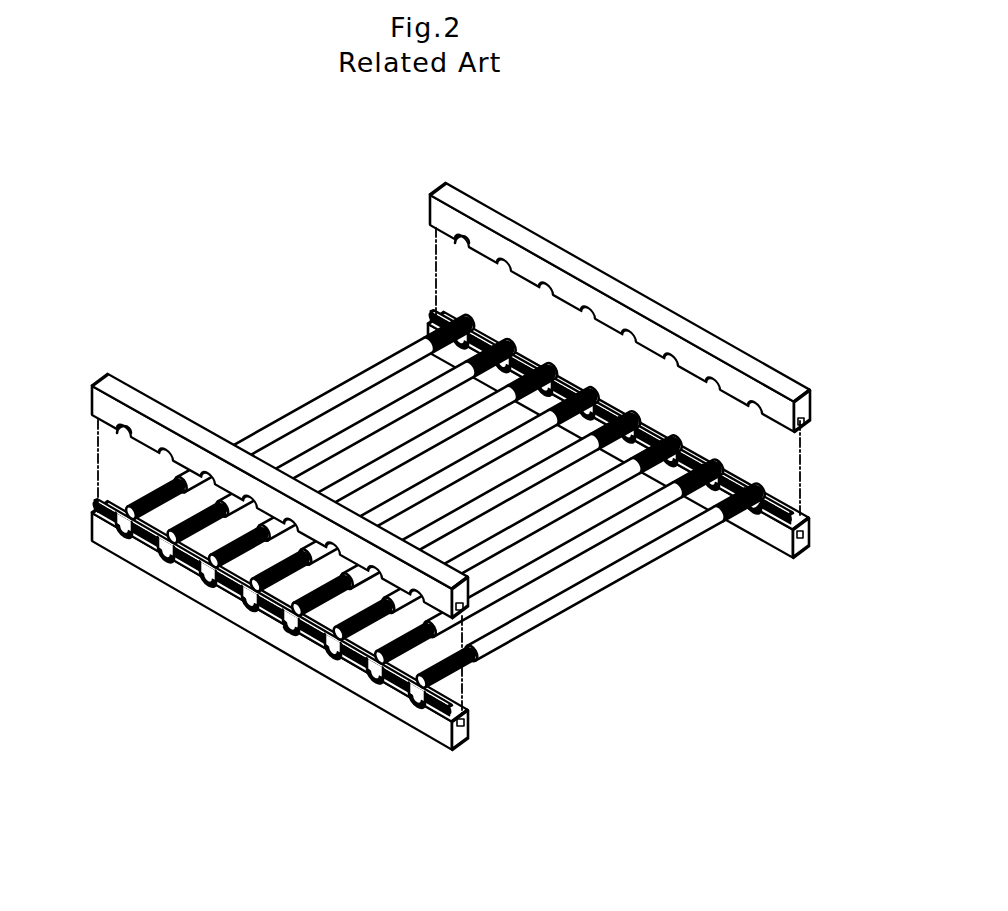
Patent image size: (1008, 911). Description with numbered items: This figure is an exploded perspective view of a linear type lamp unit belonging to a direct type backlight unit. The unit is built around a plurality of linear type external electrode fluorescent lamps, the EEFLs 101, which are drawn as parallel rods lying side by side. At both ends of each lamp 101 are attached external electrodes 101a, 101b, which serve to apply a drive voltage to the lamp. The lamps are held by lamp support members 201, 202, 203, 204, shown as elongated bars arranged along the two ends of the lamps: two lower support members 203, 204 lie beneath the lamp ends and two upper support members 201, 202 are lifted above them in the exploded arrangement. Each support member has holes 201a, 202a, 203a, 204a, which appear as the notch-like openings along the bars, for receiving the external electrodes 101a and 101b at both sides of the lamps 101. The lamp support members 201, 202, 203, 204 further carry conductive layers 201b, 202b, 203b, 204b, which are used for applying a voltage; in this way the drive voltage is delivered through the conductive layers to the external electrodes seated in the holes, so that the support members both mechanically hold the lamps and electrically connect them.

The linear type EEFL 101 is at (506, 515).
The external electrode 101a is at (467, 667).
The external electrode 101b is at (742, 495).
The lamp support member 201 is at (100, 383).
The hole 201a is at (120, 430).
The conductive layer 201b is at (467, 612).
The lamp support member 202 is at (497, 217).
The hole 202a is at (450, 240).
The conductive layer 202b is at (795, 428).
The lamp support member 203 is at (100, 537).
The hole 203a is at (294, 632).
The conductive layer 203b is at (468, 732).
The lamp support member 204 is at (780, 545).
The hole 204a is at (756, 514).
The conductive layer 204b is at (807, 534).